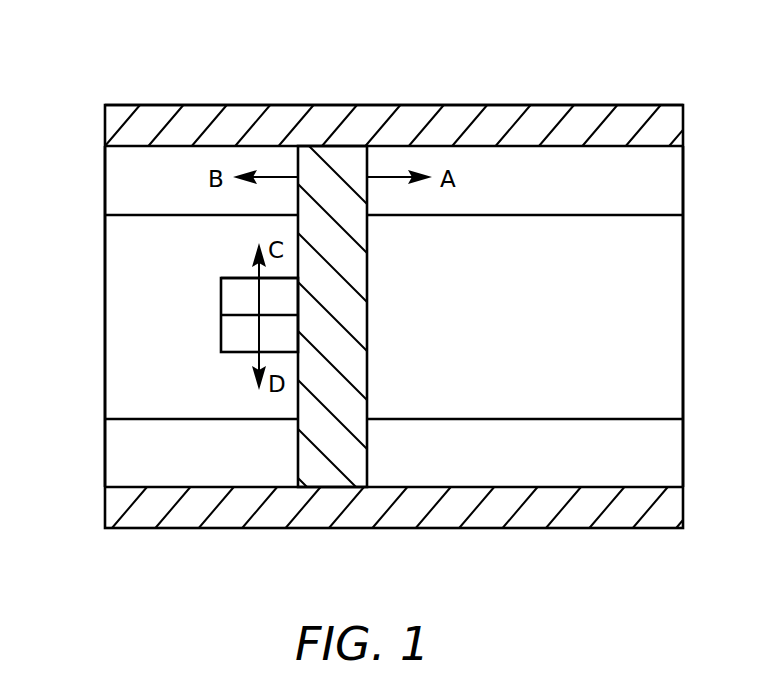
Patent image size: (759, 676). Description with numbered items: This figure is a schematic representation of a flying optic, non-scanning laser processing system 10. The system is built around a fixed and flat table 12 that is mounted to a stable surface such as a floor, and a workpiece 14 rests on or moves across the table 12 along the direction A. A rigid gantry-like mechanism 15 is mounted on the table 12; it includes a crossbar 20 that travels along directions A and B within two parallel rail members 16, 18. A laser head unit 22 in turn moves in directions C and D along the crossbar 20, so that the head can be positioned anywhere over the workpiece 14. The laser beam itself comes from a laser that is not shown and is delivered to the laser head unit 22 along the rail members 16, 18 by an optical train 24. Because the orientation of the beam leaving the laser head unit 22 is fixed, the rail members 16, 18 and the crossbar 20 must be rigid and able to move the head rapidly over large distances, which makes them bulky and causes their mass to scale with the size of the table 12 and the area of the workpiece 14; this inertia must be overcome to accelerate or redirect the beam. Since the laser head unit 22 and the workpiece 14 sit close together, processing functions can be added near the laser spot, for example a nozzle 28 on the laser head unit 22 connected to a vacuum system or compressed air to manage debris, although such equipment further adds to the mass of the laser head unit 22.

The laser processing system 10 is at (114, 62).
The table 12 is at (105, 180).
The workpiece 14 is at (665, 272).
The gantry-like mechanism 15 is at (555, 98).
The rail member 16 is at (368, 122).
The rail member 18 is at (438, 515).
The crossbar 20 is at (322, 468).
The laser head unit 22 is at (203, 314).
The optical train 24 is at (228, 296).
The nozzle 28 is at (272, 332).